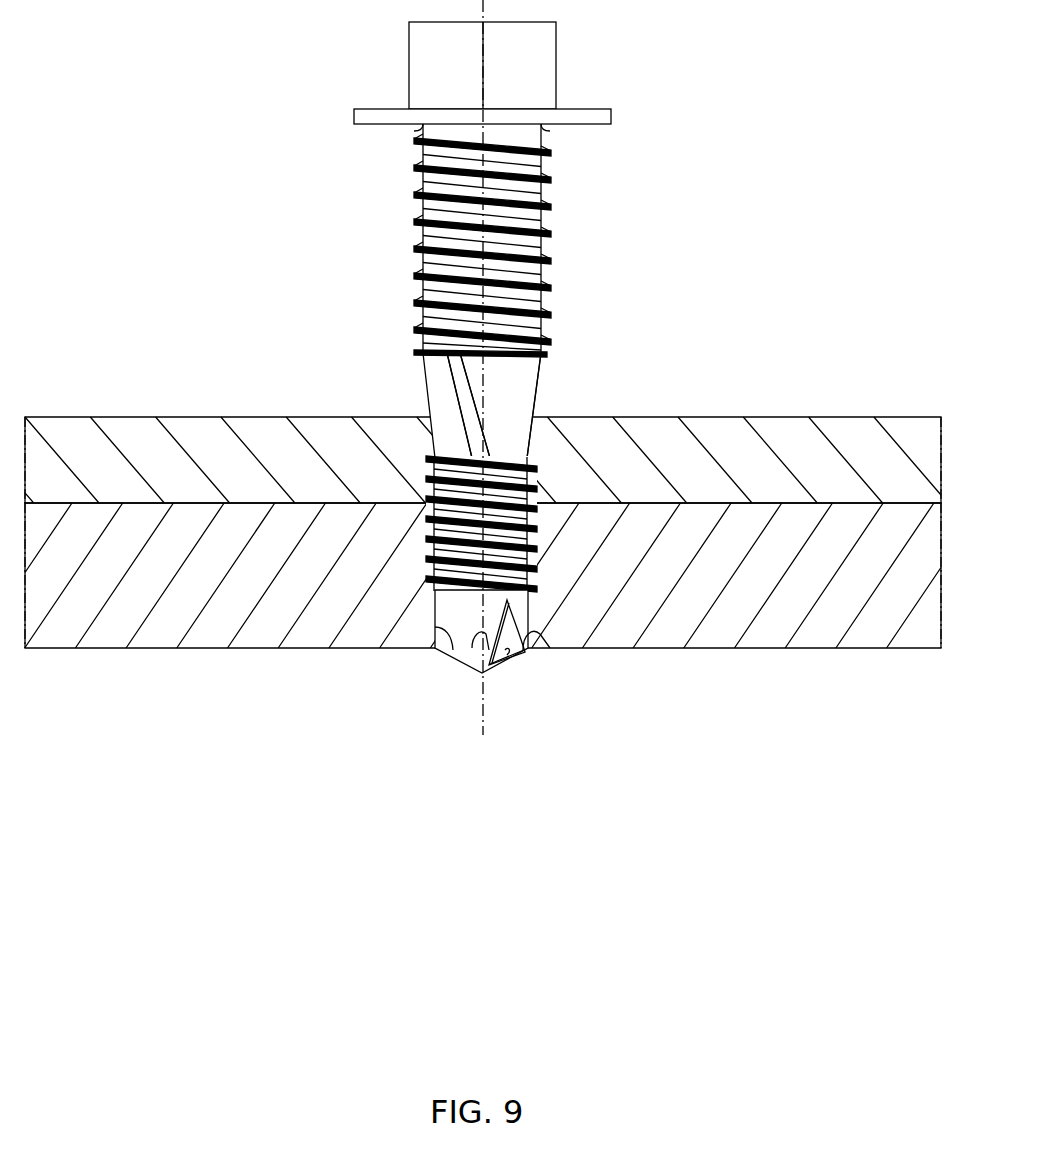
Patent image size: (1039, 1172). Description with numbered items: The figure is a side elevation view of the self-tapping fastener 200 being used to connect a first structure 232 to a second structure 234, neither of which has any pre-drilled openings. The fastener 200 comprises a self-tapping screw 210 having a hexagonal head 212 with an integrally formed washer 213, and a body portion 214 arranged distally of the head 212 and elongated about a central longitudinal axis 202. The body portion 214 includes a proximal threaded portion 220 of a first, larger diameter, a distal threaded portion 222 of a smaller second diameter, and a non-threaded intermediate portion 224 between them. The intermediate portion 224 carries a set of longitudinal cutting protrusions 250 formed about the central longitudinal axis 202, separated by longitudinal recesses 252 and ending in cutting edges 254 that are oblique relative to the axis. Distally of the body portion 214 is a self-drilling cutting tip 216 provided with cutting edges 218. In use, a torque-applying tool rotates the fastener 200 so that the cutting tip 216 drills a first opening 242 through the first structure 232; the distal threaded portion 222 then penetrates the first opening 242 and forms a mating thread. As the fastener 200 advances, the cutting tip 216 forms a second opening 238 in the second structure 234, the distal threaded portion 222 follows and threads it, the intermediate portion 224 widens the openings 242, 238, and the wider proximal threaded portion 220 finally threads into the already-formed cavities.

The self-tapping fastener 200 is at (338, 30).
The self-tapping screw 210 is at (367, 72).
The head 212 is at (557, 65).
The integrated washer 213 is at (585, 108).
The body portion 214 is at (581, 243).
The proximal threaded portion 220 is at (548, 205).
The intermediate portion 224 is at (540, 382).
The longitudinal cutting protrusions 250 is at (436, 373).
The longitudinal recesses 252 is at (437, 405).
The cutting edges 254 is at (462, 408).
The first opening 242 is at (513, 430).
The first structure 232 is at (198, 430).
The second structure 234 is at (198, 636).
The distal threaded portion 222 is at (430, 537).
The cutting tip 216 is at (511, 676).
The cutting edges 218 is at (472, 650).
The second opening 238 is at (450, 653).
The central longitudinal axis 202 is at (485, 717).